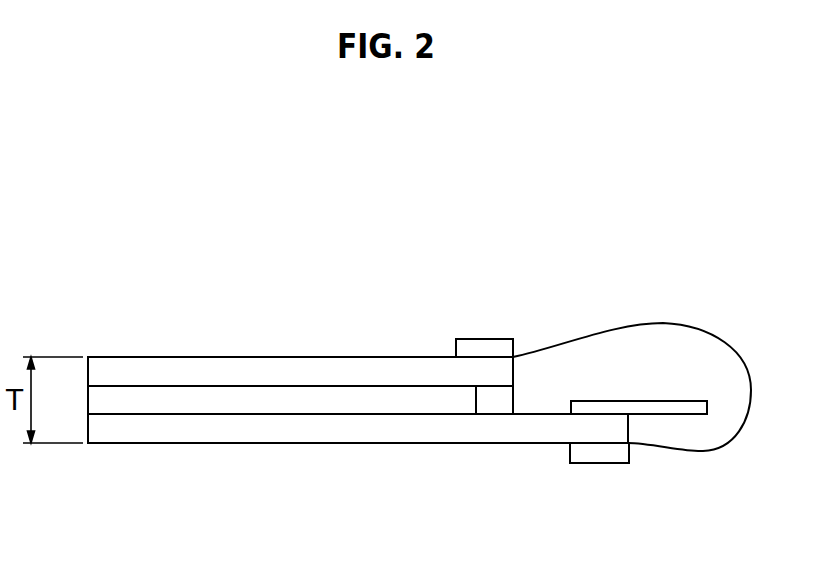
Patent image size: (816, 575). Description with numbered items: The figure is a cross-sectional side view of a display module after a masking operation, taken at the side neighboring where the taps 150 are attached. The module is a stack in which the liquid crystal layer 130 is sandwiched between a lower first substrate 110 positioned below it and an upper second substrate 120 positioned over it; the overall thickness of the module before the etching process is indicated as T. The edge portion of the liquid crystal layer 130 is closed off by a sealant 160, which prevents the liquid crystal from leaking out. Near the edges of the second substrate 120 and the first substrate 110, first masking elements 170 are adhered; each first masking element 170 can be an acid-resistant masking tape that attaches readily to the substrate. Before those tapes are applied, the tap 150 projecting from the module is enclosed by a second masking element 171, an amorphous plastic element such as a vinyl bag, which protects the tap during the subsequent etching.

The first substrate 110 is at (263, 435).
The second substrate 120 is at (190, 367).
The liquid crystal layer 130 is at (297, 397).
The tap 150 is at (662, 401).
The sealant 160 is at (505, 401).
The first masking element 170 is at (483, 345).
The second masking element 171 is at (737, 440).